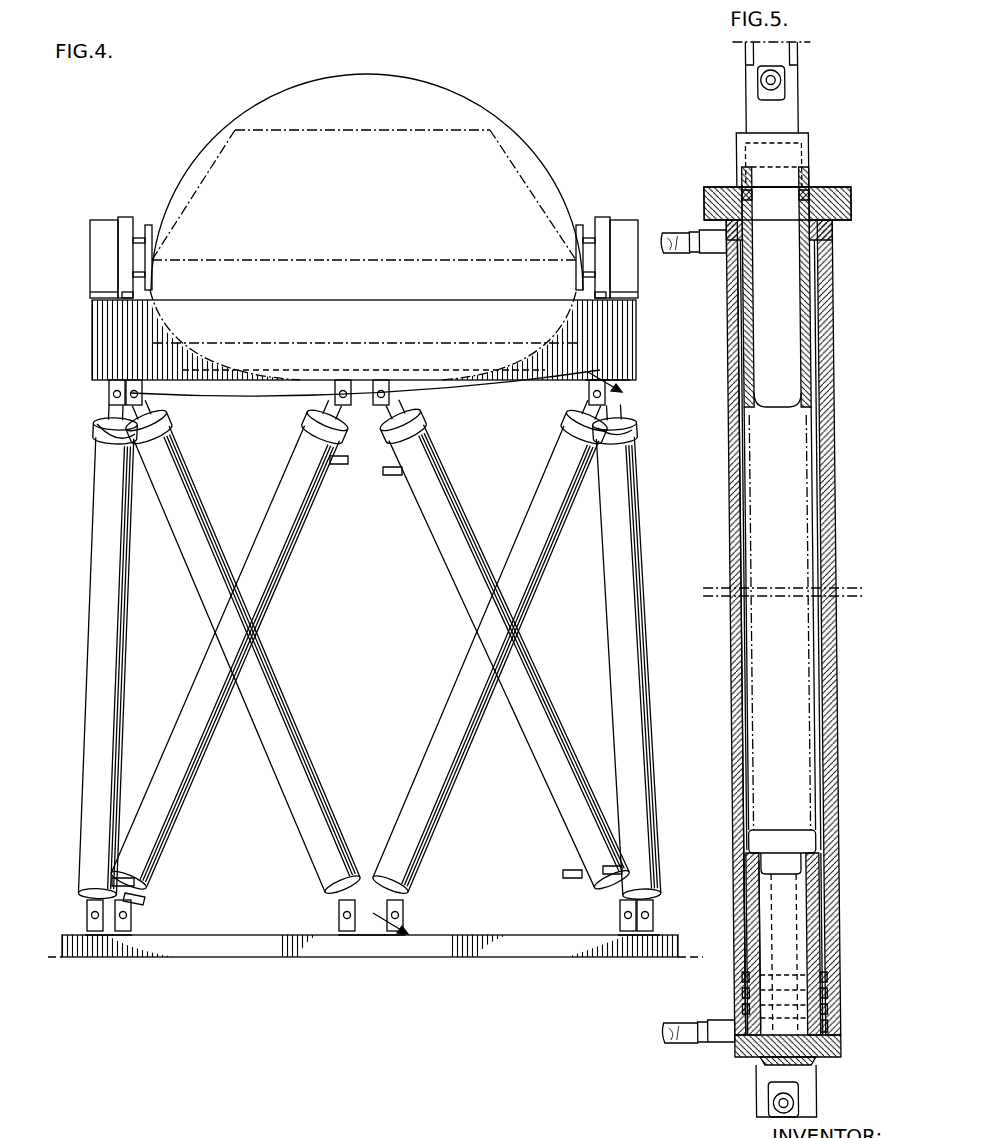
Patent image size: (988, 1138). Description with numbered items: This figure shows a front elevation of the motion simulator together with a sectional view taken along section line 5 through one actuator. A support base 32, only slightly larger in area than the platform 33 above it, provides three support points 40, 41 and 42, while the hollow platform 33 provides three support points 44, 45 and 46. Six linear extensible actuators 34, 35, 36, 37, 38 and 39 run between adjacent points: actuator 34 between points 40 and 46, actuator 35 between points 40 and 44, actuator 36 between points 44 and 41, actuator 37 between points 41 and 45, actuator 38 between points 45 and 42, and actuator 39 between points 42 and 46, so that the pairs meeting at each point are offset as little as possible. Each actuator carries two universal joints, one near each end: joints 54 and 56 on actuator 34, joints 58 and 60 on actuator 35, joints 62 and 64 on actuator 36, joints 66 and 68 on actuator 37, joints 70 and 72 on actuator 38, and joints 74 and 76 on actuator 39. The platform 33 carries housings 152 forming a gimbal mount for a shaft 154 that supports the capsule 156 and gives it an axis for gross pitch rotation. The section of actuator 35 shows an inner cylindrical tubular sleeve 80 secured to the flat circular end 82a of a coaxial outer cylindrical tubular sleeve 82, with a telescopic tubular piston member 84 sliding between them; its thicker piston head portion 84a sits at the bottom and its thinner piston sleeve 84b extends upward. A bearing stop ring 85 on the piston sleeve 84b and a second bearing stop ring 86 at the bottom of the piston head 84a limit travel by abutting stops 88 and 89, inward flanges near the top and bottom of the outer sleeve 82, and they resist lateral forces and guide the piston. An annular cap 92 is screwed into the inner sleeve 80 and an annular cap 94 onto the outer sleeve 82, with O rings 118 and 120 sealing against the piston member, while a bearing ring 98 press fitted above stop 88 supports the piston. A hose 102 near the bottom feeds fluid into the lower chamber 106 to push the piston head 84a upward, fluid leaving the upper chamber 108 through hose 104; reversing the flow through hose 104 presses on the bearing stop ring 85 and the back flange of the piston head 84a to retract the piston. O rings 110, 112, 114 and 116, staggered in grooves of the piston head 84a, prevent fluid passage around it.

In FIG. 4, the section line 5— 5 is at (489, 641).
In FIG. 4, the support base 32 is at (213, 930).
In FIG. 4, the platform 33 is at (88, 333).
In FIG. 4, the linear extensible actuator 34 is at (296, 733).
In FIG. 4, the linear extensible actuator 35 is at (453, 723).
In FIG. 5, the linear extensible actuator 35 is at (732, 697).
In FIG. 4, the linear extensible actuator 36 is at (610, 635).
In FIG. 4, the linear extensible actuator 37 is at (467, 580).
In FIG. 4, the linear extensible actuator 38 is at (277, 593).
In FIG. 4, the linear extensible actuator 39 is at (100, 606).
In FIG. 4, the support point 40 is at (372, 934).
In FIG. 4, the support point 41 is at (655, 928).
In FIG. 4, the support point 42 is at (97, 937).
In FIG. 4, the support point 44 is at (622, 398).
In FIG. 4, the support point 45 is at (368, 388).
In FIG. 4, the support point 46 is at (110, 395).
In FIG. 4, the universal joint 54 is at (339, 907).
In FIG. 4, the universal joint 56 is at (143, 410).
In FIG. 4, the universal joint 58 is at (403, 912).
In FIG. 5, the universal joint 58 is at (748, 1096).
In FIG. 4, the universal joint 60 is at (589, 400).
In FIG. 5, the universal joint 60 is at (803, 80).
In FIG. 4, the universal joint 62 is at (648, 900).
In FIG. 4, the universal joint 64 is at (615, 428).
In FIG. 4, the universal joint 66 is at (619, 903).
In FIG. 4, the universal joint 68 is at (390, 403).
In FIG. 4, the universal joint 70 is at (131, 905).
In FIG. 4, the universal joint 72 is at (335, 393).
In FIG. 4, the universal joint 74 is at (87, 914).
In FIG. 4, the universal joint 76 is at (100, 426).
In FIG. 5, the inner cylindrical tubular sleeve 80 is at (810, 934).
In FIG. 5, the outer cylindrical tubular sleeve 82 is at (824, 843).
In FIG. 5, the flat circular end 82a is at (833, 1056).
In FIG. 5, the telescopic cylindrical tubular piston member 84 is at (745, 821).
In FIG. 5, the piston head portion 84a is at (746, 978).
In FIG. 5, the piston sleeve 84b is at (826, 772).
In FIG. 5, the bearing stop ring 85 is at (823, 882).
In FIG. 5, the bearing stop ring 86 is at (740, 1015).
In FIG. 5, the stop 88 is at (826, 263).
In FIG. 5, the stop 89 is at (822, 1009).
In FIG. 5, the annular cap 92 is at (760, 199).
In FIG. 5, the annular cap 94 is at (714, 188).
In FIG. 5, the bearing ring 98 is at (829, 235).
In FIG. 5, the hose 102 is at (688, 1045).
In FIG. 5, the hose 104 is at (687, 219).
In FIG. 5, the lower chamber 106 is at (824, 1038).
In FIG. 5, the upper chamber 108 is at (820, 320).
In FIG. 5, the O ring 110 is at (740, 1001).
In FIG. 5, the O ring 112 is at (822, 993).
In FIG. 5, the O ring 114 is at (740, 987).
In FIG. 5, the O ring 116 is at (822, 977).
In FIG. 5, the O ring 118 is at (752, 194).
In FIG. 5, the O ring 120 is at (809, 202).
In FIG. 4, the housing 152 is at (100, 222).
In FIG. 4, the shaft 154 is at (140, 238).
In FIG. 4, the capsule 156 is at (357, 128).